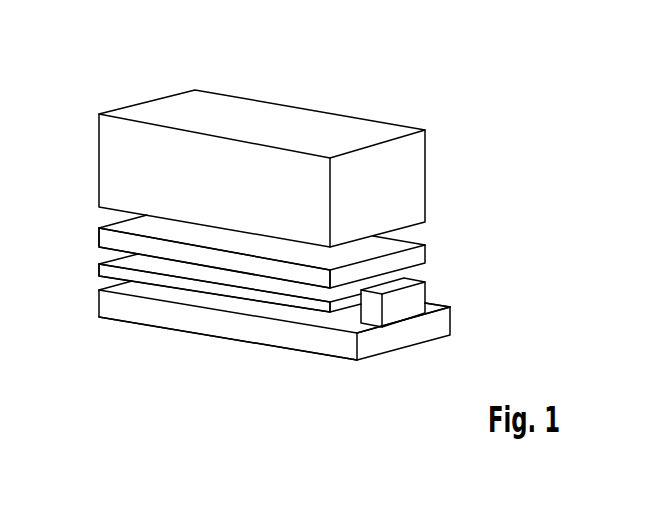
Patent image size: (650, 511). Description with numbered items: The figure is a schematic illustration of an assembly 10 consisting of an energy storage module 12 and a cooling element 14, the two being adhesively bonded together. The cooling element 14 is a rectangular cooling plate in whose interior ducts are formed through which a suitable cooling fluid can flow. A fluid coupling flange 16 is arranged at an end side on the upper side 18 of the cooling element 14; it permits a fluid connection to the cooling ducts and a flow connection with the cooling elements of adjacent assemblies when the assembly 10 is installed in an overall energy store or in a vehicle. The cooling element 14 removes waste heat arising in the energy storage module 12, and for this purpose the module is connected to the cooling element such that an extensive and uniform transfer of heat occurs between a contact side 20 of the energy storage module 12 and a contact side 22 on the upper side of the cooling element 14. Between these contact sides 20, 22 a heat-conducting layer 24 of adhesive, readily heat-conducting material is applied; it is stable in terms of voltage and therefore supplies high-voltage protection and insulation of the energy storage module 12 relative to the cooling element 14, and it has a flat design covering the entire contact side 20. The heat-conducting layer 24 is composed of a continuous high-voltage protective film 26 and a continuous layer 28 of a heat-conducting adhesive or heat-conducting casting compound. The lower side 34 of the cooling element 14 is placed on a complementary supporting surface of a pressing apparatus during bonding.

The assembly 10 is at (377, 92).
The energy storage module 12 is at (413, 163).
The cooling element 14 is at (445, 323).
The fluid coupling flange 16 is at (397, 312).
The upper side 18 is at (430, 308).
The contact side 20 is at (123, 218).
The contact side 22 is at (128, 281).
The heat-conducting layer 24 is at (92, 228).
The high-voltage protective film 26 is at (270, 298).
The layer of heat-conducting adhesive 28 is at (222, 260).
The lower side 34 is at (138, 327).